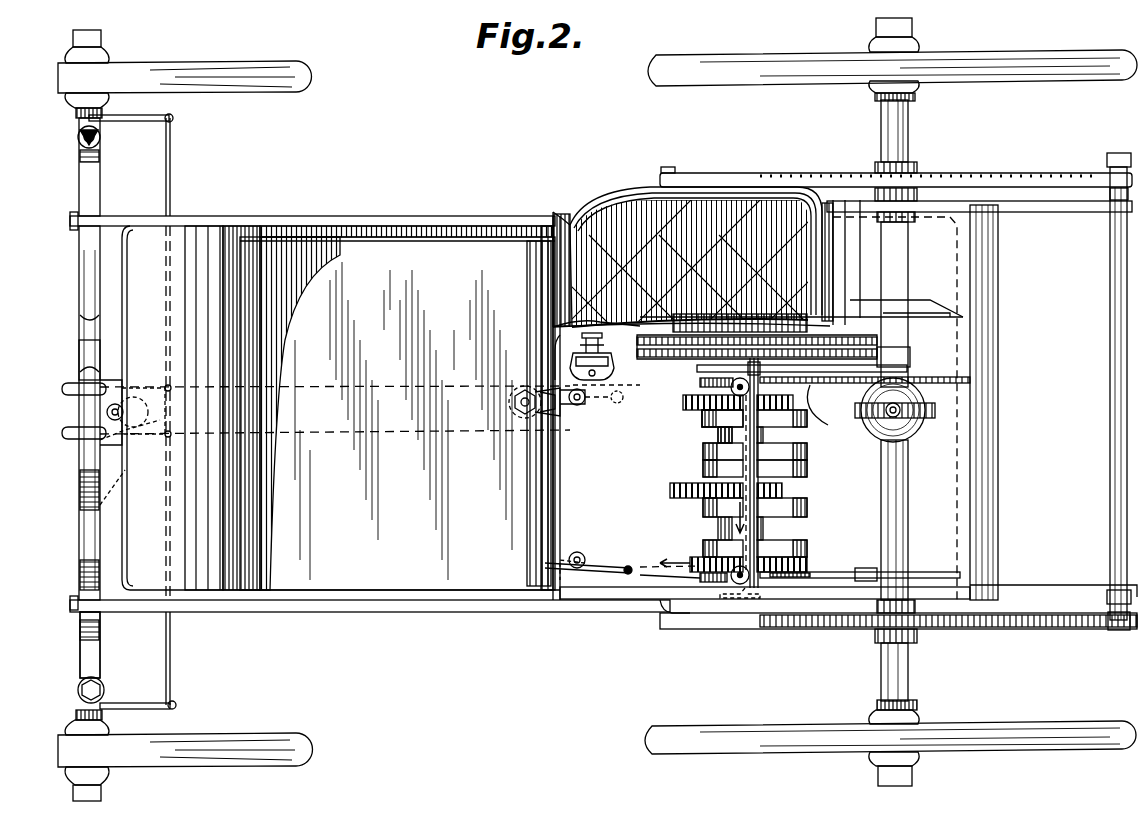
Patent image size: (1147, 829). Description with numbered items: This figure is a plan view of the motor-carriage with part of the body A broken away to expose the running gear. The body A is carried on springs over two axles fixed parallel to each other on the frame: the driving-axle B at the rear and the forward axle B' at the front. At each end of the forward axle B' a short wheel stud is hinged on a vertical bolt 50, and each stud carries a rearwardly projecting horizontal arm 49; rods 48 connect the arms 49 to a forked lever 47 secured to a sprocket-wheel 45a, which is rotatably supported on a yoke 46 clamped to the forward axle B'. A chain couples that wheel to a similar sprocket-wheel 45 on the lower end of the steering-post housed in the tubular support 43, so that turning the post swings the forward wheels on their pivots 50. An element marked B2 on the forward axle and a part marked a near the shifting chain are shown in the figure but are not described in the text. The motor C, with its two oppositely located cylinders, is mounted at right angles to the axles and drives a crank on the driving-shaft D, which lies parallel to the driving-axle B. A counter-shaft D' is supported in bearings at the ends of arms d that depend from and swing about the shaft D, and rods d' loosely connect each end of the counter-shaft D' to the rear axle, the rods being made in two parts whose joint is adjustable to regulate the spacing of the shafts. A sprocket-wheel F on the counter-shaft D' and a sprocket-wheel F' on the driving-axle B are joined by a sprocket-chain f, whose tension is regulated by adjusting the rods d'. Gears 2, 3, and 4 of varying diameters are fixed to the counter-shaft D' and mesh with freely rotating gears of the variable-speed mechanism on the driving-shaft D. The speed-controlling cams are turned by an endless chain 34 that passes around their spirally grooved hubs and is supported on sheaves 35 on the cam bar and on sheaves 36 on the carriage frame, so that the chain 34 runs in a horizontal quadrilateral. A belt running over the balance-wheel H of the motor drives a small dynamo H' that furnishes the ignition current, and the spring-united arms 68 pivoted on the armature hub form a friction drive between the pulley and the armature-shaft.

The body A is at (521, 408).
The driving-axle B is at (489, 400).
The axle journal B2 is at (88, 358).
The forward axle B' is at (112, 645).
The motor C is at (900, 326).
The driving-shaft D is at (785, 478).
The counter-shaft D' is at (733, 482).
The sprocket-wheel F is at (721, 401).
The sprocket-wheel F' is at (901, 416).
The balance-wheel H is at (800, 310).
The dynamo H' is at (566, 334).
The shifting bar a is at (700, 580).
The arms d is at (812, 367).
The rods d' is at (860, 482).
The sprocket-chain f is at (818, 412).
The gear 2 is at (702, 412).
The gear 3 is at (700, 560).
The gear 4 is at (676, 490).
The chain 34 is at (637, 398).
The sheaves 35 is at (717, 437).
The sheaves 36 is at (580, 405).
The tubular support 43 is at (517, 412).
The sprocket-wheel 45 is at (528, 418).
The sprocket-wheel 45a is at (118, 442).
The yoke 46 is at (107, 397).
The forked lever 47 is at (78, 505).
The rods 48 is at (172, 178).
The horizontal arm 49 is at (143, 124).
The vertical bolt 50 is at (82, 148).
The arms 68 is at (570, 362).